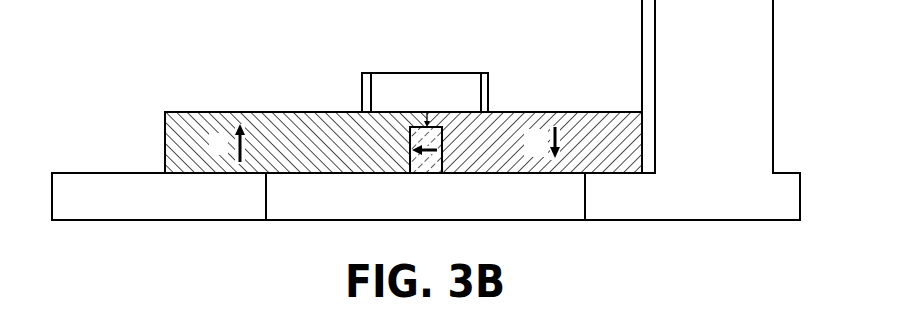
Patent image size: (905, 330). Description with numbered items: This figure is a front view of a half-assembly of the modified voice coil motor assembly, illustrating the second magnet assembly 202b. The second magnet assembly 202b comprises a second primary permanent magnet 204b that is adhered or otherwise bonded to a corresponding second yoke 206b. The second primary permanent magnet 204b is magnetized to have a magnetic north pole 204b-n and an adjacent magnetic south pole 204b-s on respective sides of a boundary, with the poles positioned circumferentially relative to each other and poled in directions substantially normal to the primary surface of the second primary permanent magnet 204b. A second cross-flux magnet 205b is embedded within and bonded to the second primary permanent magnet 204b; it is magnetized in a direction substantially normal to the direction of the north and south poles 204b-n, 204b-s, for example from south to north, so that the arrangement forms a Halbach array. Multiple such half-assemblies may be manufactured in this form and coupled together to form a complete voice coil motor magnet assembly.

The second magnet assembly 202b is at (551, 228).
The second primary permanent magnet 204b is at (356, 156).
The magnetic north pole 204b-n is at (297, 122).
The magnetic south pole 204b-s is at (520, 120).
The second cross-flux magnet 205b is at (423, 174).
The second yoke 206b is at (128, 210).